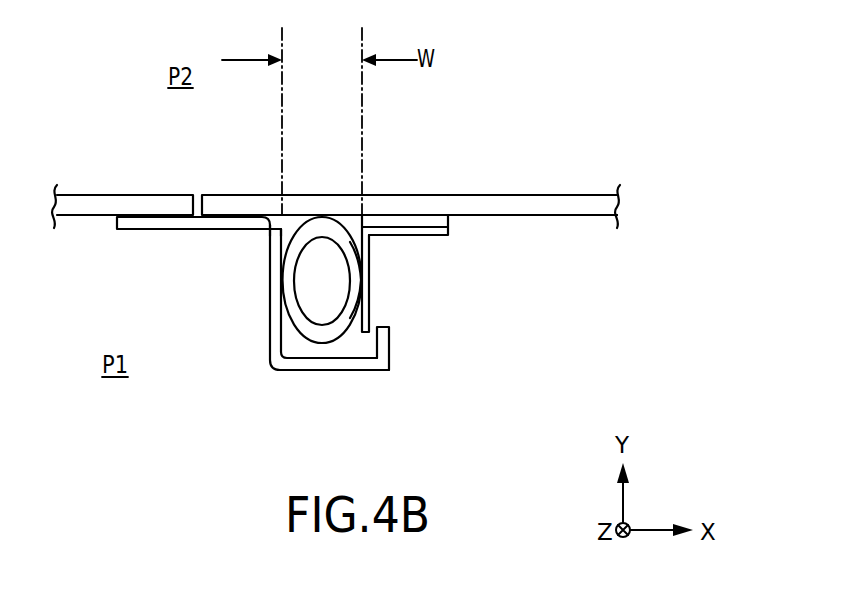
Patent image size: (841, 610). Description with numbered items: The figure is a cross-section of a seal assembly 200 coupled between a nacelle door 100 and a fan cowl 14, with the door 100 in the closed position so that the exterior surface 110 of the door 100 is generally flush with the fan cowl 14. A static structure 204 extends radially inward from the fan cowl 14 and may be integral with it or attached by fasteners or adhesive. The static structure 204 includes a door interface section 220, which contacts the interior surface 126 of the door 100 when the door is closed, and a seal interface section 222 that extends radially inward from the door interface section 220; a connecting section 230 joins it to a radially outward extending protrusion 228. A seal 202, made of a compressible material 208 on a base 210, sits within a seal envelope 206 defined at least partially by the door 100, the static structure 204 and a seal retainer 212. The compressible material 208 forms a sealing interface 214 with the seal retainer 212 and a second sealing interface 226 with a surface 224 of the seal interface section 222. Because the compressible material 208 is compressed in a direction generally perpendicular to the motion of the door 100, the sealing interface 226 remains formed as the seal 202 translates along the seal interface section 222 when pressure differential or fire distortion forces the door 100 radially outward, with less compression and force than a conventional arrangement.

The fan cowl 14 is at (74, 200).
The door 100 is at (470, 212).
The exterior surface 110 is at (564, 197).
The interior surface 126 is at (570, 215).
The seal assembly 200 is at (174, 165).
The seal 202 is at (296, 209).
The static structure 204 is at (104, 240).
The seal envelope 206 is at (288, 224).
The compressible material 208 is at (317, 227).
The base 210 is at (430, 223).
The seal retainer 212 is at (366, 258).
The sealing interface 214 is at (365, 277).
The door interface section 220 is at (155, 229).
The seal interface section 222 is at (279, 327).
The surface 224 is at (282, 338).
The sealing interface 226 is at (282, 285).
The radially outward extending protrusion 228 is at (383, 343).
The connecting section 230 is at (347, 358).